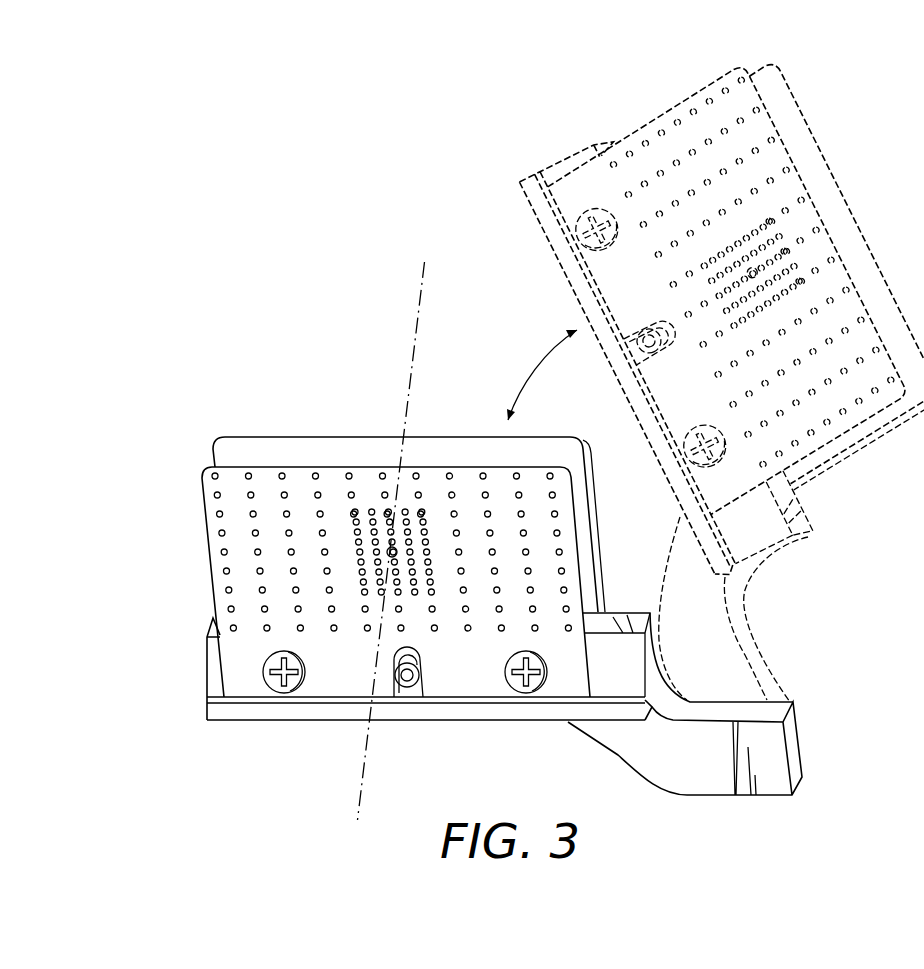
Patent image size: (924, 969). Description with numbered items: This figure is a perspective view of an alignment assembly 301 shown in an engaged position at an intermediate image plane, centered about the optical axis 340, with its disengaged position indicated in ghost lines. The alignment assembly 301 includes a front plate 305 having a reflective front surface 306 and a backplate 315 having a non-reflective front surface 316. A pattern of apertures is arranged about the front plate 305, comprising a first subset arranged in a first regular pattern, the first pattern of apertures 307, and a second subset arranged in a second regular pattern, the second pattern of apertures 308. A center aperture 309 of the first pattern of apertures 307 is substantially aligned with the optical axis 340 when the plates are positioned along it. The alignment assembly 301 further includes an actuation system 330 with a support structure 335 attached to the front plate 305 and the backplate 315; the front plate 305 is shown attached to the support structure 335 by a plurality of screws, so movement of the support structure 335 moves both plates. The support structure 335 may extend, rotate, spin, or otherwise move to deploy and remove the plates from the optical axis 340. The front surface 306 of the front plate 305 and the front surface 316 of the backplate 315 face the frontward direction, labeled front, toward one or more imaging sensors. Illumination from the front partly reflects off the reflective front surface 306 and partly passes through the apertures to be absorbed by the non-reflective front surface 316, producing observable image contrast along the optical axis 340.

The alignment assembly 301 is at (195, 236).
The front plate 305 is at (200, 497).
The reflective front surface 306 is at (266, 696).
The first pattern of apertures 307 is at (266, 634).
The second pattern of apertures 308 is at (388, 551).
The center aperture 309 is at (420, 747).
The backplate 315 is at (210, 435).
The non-reflective front surface 316 is at (282, 455).
The actuation system 330 is at (780, 800).
The support structure 335 is at (600, 748).
The optical axis 340 is at (414, 344).